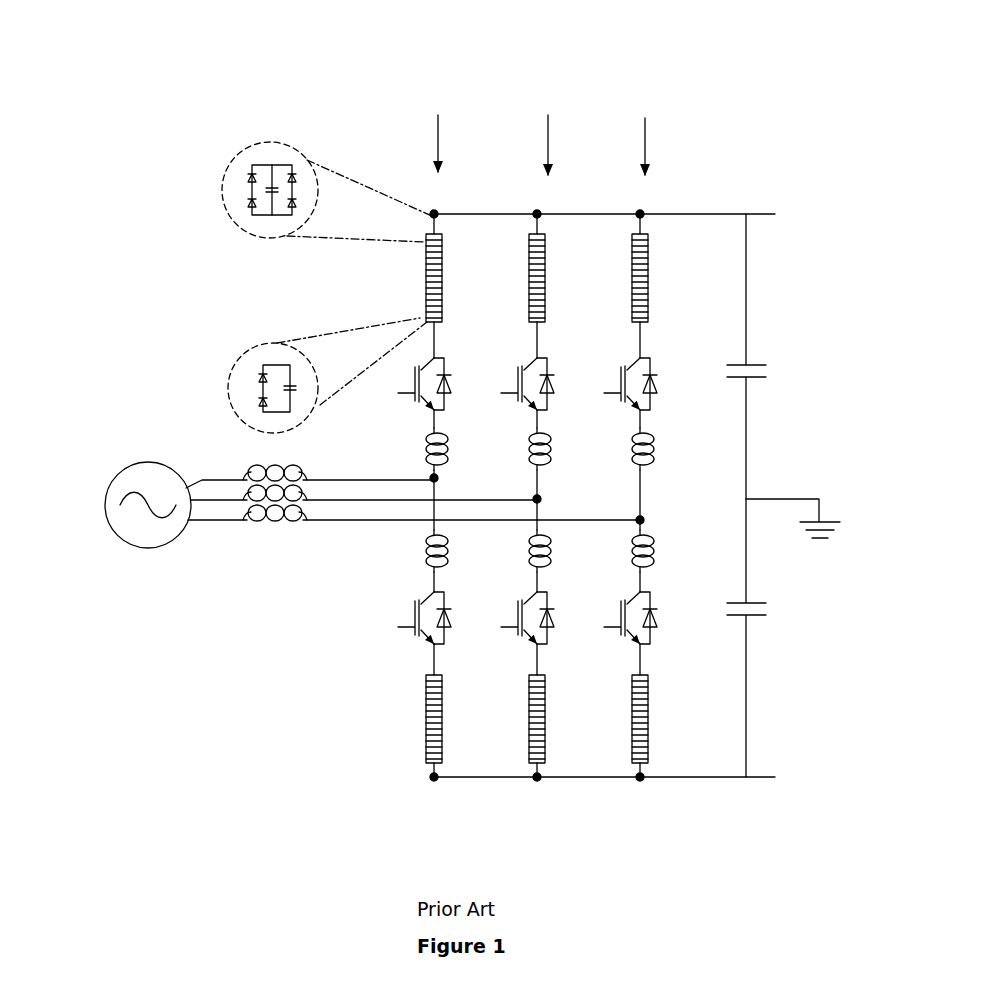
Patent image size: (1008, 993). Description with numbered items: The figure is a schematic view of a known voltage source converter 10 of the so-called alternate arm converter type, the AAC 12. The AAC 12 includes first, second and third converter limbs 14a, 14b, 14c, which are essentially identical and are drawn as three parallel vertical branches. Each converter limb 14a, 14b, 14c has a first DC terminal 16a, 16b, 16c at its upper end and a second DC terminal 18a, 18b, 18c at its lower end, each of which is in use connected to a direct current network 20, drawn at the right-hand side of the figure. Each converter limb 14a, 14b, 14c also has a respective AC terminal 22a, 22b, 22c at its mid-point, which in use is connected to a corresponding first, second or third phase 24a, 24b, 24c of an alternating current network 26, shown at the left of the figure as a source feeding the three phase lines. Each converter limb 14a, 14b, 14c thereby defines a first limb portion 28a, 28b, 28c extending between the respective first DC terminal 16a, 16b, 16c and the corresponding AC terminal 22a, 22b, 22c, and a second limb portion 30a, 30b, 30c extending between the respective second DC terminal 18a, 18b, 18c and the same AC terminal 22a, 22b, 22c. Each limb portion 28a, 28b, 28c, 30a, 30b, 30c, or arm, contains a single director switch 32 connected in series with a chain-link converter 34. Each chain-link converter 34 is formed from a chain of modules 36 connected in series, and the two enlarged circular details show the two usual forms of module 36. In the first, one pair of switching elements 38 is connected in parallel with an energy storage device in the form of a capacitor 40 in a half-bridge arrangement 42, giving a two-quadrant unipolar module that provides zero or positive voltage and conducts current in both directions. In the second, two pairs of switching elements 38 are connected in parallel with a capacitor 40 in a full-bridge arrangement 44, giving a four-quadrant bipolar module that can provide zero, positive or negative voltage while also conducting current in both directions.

The voltage source converter 10 is at (278, 95).
The alternate arm converter 12 is at (372, 108).
The first converter limb 14a is at (438, 127).
The second converter limb 14b is at (545, 128).
The third converter limb 14c is at (649, 128).
The first DC terminal 16a is at (432, 213).
The first DC terminal 16b is at (533, 212).
The first DC terminal 16c is at (637, 213).
The second DC terminal 18a is at (433, 780).
The second DC terminal 18b is at (536, 780).
The second DC terminal 18c is at (640, 780).
The DC network 20 is at (782, 318).
The AC terminal 22a is at (437, 479).
The AC terminal 22b is at (540, 500).
The AC terminal 22c is at (643, 520).
The first phase 24a is at (202, 480).
The second phase 24b is at (209, 502).
The third phase 24c is at (232, 525).
The AC network 26 is at (110, 478).
The first limb portion 28a is at (390, 299).
The first limb portion 28b is at (578, 292).
The first limb portion 28c is at (670, 280).
The second limb portion 30a is at (385, 640).
The second limb portion 30b is at (515, 655).
The second limb portion 30c is at (630, 640).
The director switch 32 is at (428, 410).
The chain-link converter 34 is at (441, 278).
The module 36 is at (232, 160).
The switching elements 38 is at (245, 176).
The capacitor 40 is at (263, 220).
The half-bridge arrangement 42 is at (248, 345).
The full-bridge arrangement 44 is at (258, 150).